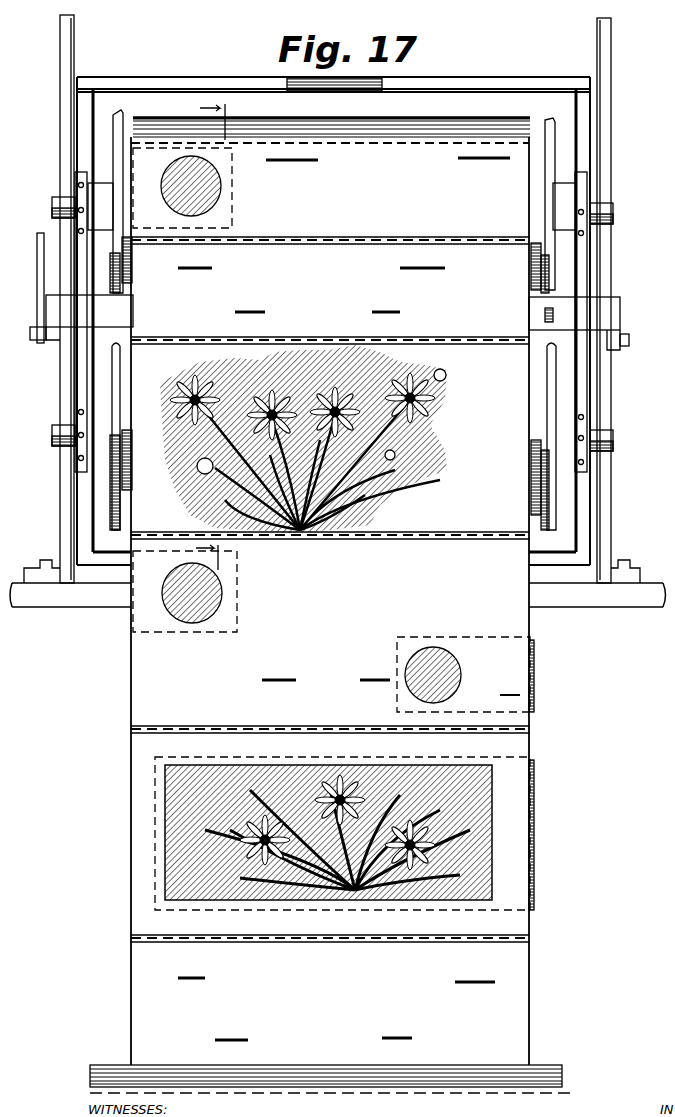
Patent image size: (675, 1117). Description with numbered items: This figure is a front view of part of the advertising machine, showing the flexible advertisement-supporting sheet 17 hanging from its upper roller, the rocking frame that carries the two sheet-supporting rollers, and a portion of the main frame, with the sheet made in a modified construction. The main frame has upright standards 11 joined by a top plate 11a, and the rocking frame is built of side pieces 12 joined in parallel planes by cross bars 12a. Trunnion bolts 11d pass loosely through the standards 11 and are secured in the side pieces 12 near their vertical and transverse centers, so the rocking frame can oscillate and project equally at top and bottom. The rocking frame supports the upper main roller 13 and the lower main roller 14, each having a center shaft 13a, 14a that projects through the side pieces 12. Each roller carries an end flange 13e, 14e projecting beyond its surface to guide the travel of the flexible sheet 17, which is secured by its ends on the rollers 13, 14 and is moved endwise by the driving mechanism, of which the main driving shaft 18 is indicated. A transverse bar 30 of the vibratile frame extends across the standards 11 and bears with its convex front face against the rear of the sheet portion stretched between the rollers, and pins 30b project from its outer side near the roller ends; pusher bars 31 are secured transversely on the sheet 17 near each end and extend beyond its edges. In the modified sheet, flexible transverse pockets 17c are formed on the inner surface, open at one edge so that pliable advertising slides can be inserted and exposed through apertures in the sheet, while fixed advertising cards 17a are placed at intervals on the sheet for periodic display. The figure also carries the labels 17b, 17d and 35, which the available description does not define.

The standard 11 is at (64, 130).
The top plate 11a is at (496, 93).
The trunnion bolt 11d is at (34, 342).
The side piece 12 is at (82, 154).
The cross bar 12a is at (358, 91).
The upper main roller 13 is at (540, 118).
The center shaft of upper roller 13a is at (52, 204).
The flange of upper roller 13e is at (120, 112).
The lower main roller 14 is at (537, 520).
The center shaft of lower roller 14a is at (54, 440).
The flange of lower roller 14e is at (122, 352).
The flexible sheet 17 is at (516, 1090).
The advertisement card 17a is at (556, 1020).
The commodity section 17b is at (375, 189).
The transverse pocket 17c is at (133, 178).
The picture section 17d is at (534, 838).
The main driving shaft 18 is at (219, 335).
The transverse bar 30 is at (638, 312).
The pin 30b is at (570, 314).
The pusher bar 31 is at (540, 1068).
The lever 35 is at (40, 288).